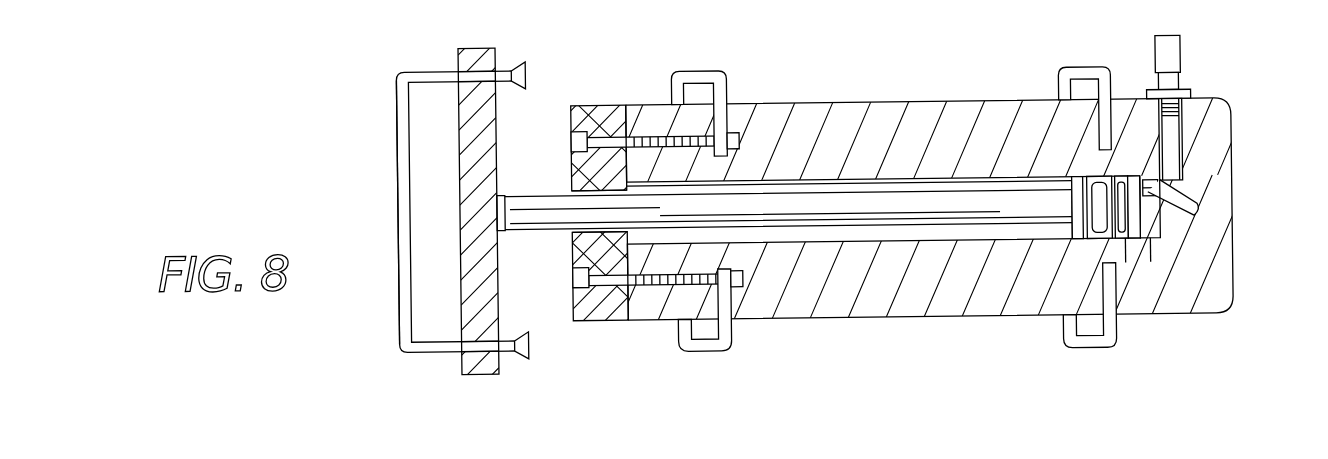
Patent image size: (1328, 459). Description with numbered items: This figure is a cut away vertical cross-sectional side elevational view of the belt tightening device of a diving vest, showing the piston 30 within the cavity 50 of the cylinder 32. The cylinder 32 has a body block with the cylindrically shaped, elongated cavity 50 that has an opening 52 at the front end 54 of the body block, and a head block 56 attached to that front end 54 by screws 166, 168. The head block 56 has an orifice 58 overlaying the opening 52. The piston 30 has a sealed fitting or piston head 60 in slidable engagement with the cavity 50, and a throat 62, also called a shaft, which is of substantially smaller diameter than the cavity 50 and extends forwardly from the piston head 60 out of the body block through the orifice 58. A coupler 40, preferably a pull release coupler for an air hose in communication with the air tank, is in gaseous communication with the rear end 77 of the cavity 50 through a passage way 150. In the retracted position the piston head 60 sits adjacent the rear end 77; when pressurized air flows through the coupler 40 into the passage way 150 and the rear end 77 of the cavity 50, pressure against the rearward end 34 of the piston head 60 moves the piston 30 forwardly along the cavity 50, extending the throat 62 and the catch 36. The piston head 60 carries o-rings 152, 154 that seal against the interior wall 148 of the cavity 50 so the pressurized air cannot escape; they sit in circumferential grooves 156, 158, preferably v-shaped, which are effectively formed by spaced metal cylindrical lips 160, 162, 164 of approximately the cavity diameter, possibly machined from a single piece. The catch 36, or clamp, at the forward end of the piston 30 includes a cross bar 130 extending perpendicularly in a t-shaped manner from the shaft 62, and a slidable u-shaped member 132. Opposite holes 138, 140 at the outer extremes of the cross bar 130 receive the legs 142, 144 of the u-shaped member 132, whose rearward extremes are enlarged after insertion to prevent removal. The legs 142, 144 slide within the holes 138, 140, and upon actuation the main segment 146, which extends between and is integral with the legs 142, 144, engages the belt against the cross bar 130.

The piston 30 is at (1130, 153).
The cylinder 32 is at (800, 103).
The rearward end of piston 34 is at (1145, 244).
The catch 36 is at (414, 212).
The coupler 40 is at (1187, 82).
The cavity 50 is at (1150, 226).
The opening 52 is at (680, 179).
The front end of body block 54 is at (640, 278).
The head block 56 is at (570, 163).
The orifice 58 is at (571, 266).
The piston head 60 is at (1095, 303).
The throat 62 is at (562, 217).
The rear end of cavity 77 is at (1204, 200).
The cross bar 130 is at (462, 181).
The u-shaped member 132 is at (398, 266).
The hole 138 is at (458, 66).
The hole 140 is at (458, 336).
The leg 142 is at (438, 75).
The leg 144 is at (430, 348).
The main segment 146 is at (395, 315).
The interior wall 148 is at (890, 190).
The passage way 150 is at (1202, 130).
The o-ring 152 is at (1186, 162).
The o-ring 154 is at (1095, 181).
The circumferential groove 156 is at (1132, 284).
The circumferential groove 158 is at (1080, 283).
The metal cylindrical lip 160 is at (1134, 259).
The metal cylindrical lip 162 is at (1152, 319).
The metal cylindrical lip 164 is at (1095, 249).
The screw 166 is at (576, 128).
The screw 168 is at (598, 288).